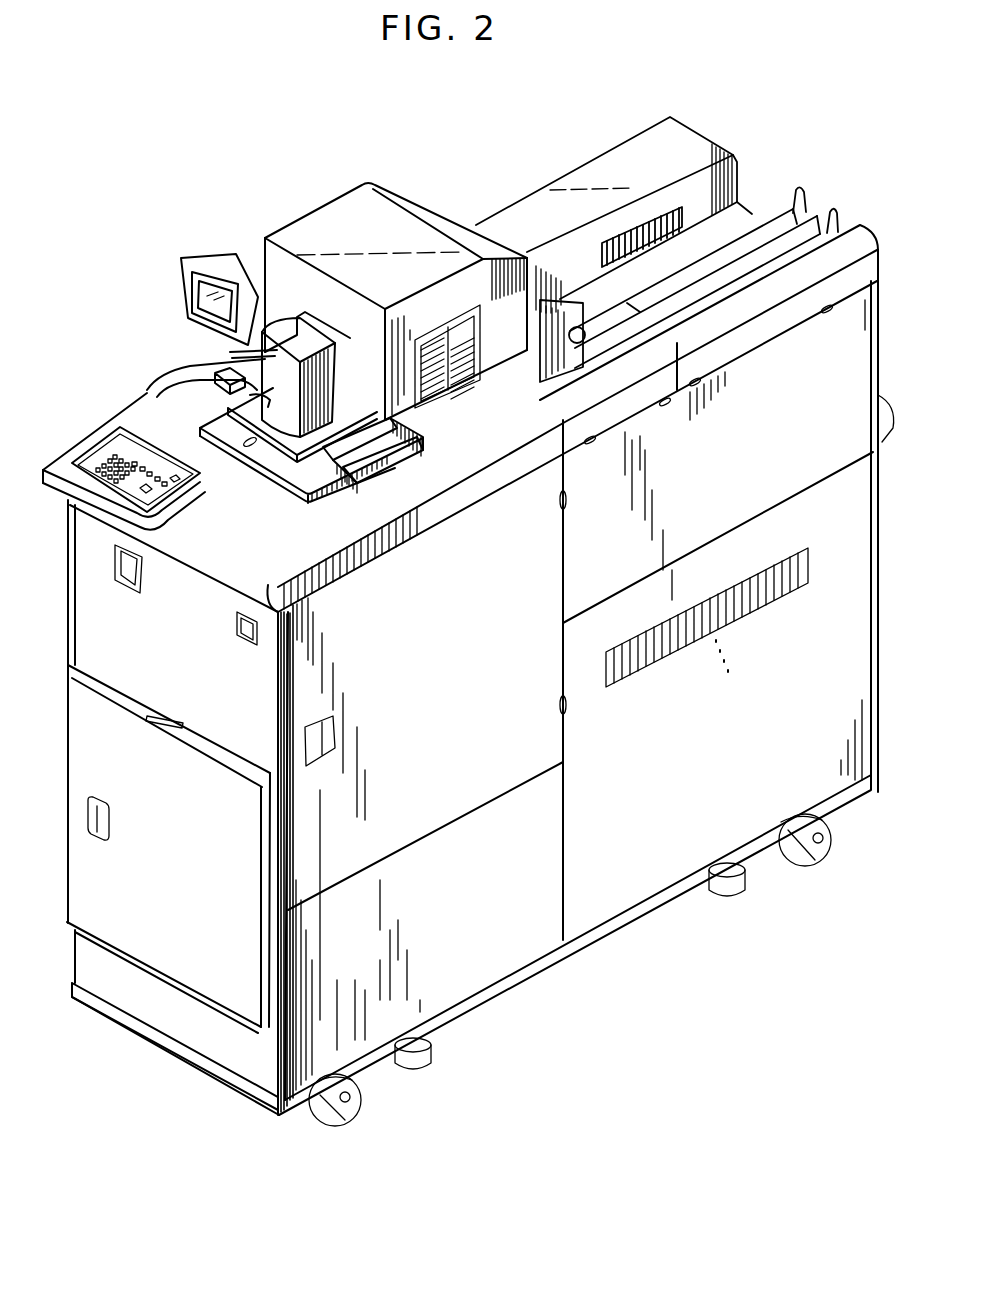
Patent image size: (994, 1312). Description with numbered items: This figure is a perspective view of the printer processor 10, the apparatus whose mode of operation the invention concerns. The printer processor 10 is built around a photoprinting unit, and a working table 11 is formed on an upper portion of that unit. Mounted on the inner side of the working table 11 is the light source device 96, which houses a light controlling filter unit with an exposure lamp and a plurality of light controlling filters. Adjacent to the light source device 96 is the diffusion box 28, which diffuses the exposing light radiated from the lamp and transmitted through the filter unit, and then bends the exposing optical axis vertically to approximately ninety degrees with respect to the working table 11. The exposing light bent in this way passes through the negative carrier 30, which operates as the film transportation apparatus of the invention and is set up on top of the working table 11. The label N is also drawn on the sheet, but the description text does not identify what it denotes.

The printer processor 10 is at (798, 142).
The working table 11 is at (157, 423).
The diffusion box 28 is at (238, 371).
The support arm N is at (170, 372).
The negative carrier 30 is at (291, 468).
The light source device 96 is at (345, 215).